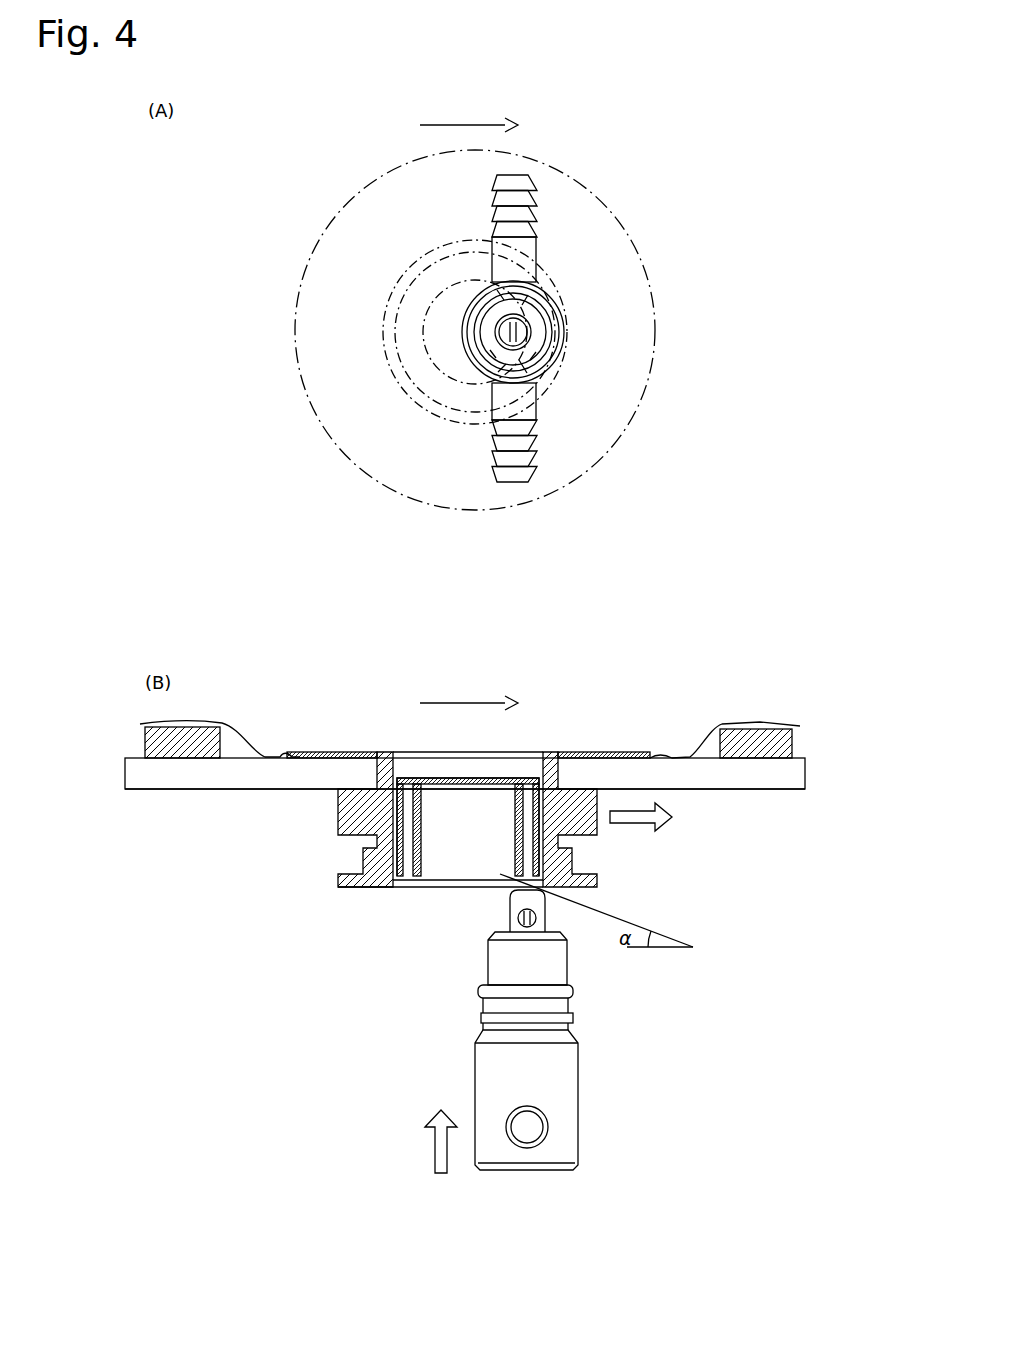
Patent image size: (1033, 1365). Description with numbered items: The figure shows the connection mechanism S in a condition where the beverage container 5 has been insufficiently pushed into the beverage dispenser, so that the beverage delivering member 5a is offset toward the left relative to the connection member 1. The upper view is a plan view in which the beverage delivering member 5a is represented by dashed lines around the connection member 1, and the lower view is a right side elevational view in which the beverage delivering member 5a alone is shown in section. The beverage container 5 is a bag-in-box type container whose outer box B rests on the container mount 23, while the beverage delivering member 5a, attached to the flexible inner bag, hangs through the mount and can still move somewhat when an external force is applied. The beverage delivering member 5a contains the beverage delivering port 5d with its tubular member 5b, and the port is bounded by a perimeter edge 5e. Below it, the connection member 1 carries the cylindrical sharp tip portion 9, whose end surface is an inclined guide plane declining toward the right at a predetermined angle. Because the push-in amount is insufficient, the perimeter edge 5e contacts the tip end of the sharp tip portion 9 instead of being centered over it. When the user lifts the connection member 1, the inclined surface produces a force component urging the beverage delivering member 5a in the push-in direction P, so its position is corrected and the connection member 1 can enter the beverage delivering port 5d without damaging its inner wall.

The connection member 1 is at (558, 313).
The sharp tip portion 9 is at (531, 334).
The beverage container 5 is at (626, 424).
The beverage delivering member 5a is at (445, 420).
The tubular member 5b is at (432, 355).
The beverage delivering port 5d is at (460, 867).
The perimeter edge 5e is at (405, 885).
The container mount 23 is at (723, 790).
The outer box B is at (795, 745).
The connection mechanism S is at (650, 201).
The push-in direction P is at (486, 416).